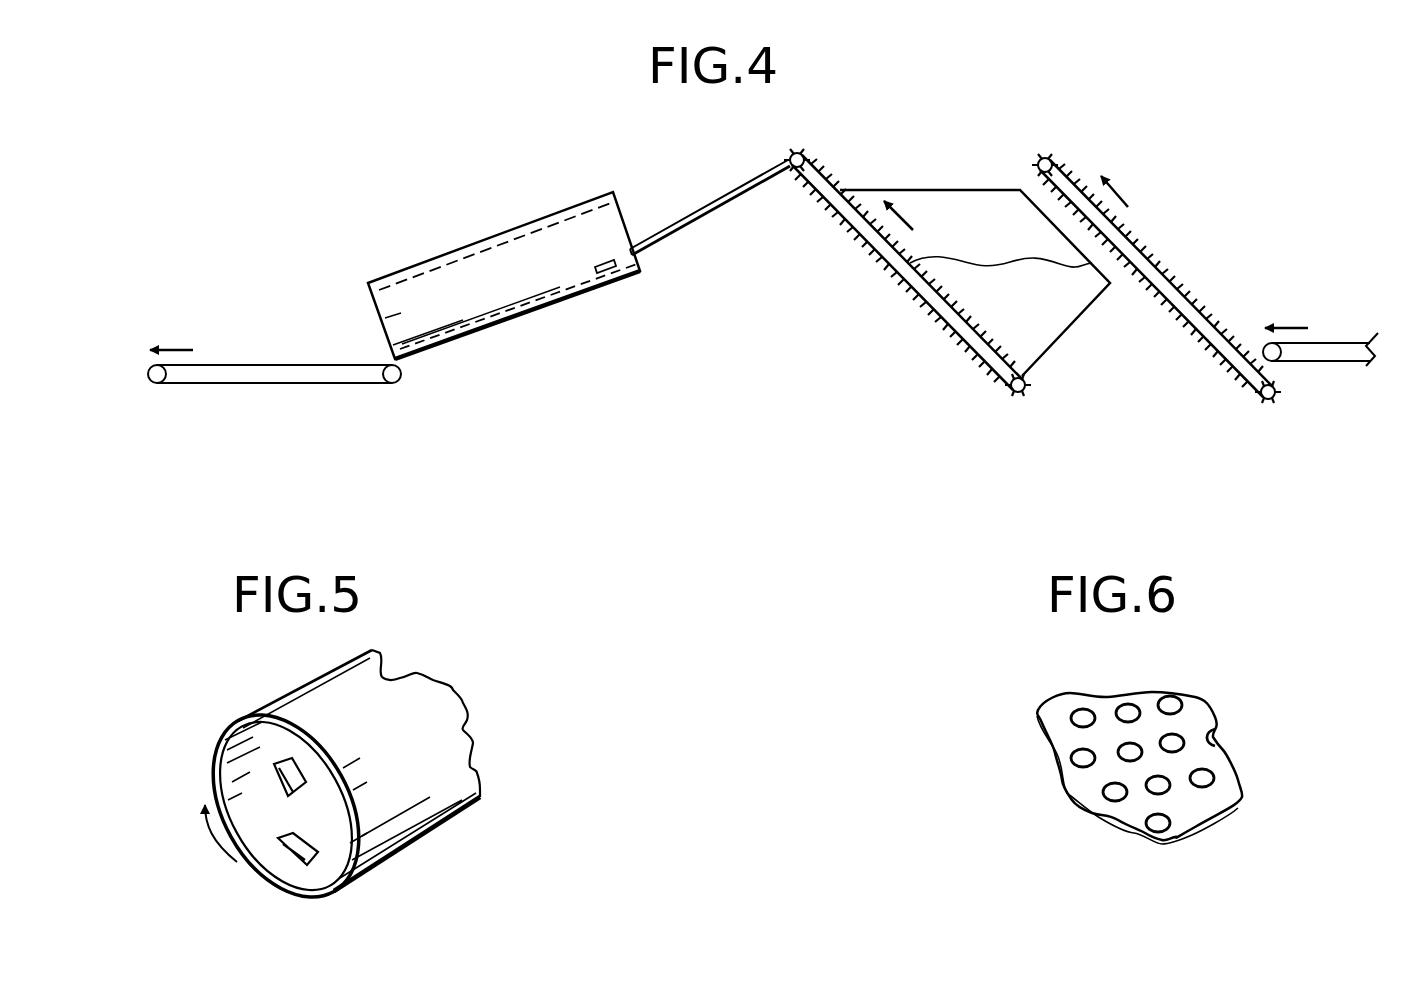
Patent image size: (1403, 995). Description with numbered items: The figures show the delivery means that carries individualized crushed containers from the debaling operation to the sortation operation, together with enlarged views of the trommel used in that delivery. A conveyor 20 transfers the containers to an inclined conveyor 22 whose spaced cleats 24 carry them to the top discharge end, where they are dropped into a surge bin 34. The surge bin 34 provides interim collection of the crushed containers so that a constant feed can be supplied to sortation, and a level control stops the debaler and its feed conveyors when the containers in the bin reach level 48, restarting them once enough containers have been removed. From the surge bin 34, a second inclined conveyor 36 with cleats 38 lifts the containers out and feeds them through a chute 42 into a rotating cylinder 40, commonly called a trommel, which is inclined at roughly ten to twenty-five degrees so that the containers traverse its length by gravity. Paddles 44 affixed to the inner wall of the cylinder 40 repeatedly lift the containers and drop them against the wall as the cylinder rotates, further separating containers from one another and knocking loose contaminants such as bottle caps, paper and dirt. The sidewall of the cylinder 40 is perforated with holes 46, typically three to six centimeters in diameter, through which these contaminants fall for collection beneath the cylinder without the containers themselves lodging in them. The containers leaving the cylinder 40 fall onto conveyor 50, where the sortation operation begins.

In FIG. 4, the conveyor 20 is at (1327, 362).
In FIG. 4, the inclined conveyor 22 is at (1133, 235).
In FIG. 4, the cleats 24 is at (1175, 278).
In FIG. 4, the surge bin 34 is at (1067, 327).
In FIG. 4, the second inclined conveyor 36 is at (975, 357).
In FIG. 4, the cleats 38 is at (898, 285).
In FIG. 4, the rotating cylinder 40 is at (517, 228).
In FIG. 5, the rotating cylinder 40 is at (415, 693).
In FIG. 6, the rotating cylinder 40 is at (1075, 812).
In FIG. 4, the chute 42 is at (708, 213).
In FIG. 5, the paddles 44 is at (290, 860).
In FIG. 6, the holes 46 is at (1170, 703).
In FIG. 4, the level 48 is at (1023, 263).
In FIG. 4, the conveyor 50 is at (290, 385).